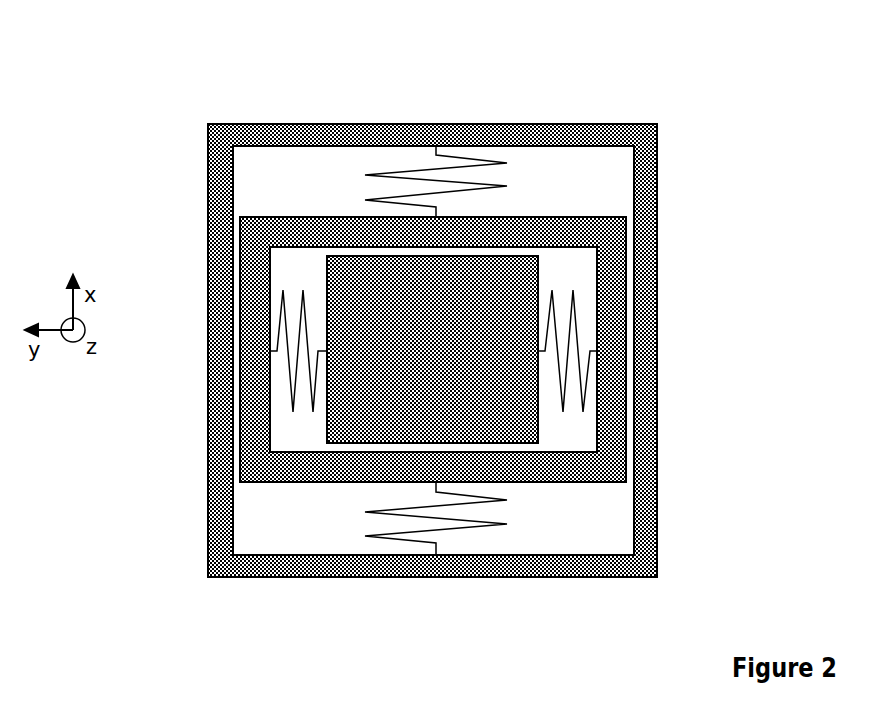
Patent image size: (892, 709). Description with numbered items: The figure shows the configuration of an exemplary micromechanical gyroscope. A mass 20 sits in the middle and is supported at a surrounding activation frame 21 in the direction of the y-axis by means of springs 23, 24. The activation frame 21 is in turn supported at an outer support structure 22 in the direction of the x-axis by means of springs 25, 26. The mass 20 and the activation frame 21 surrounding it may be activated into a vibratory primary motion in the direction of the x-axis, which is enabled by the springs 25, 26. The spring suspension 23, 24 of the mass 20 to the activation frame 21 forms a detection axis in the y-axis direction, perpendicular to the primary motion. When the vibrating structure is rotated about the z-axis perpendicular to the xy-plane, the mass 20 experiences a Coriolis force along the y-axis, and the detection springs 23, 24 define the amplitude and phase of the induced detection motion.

The mass 20 is at (540, 271).
The activation frame 21 is at (582, 217).
The support structure 22 is at (627, 124).
The spring 23 is at (282, 283).
The spring 24 is at (573, 302).
The spring 25 is at (490, 160).
The spring 26 is at (482, 521).